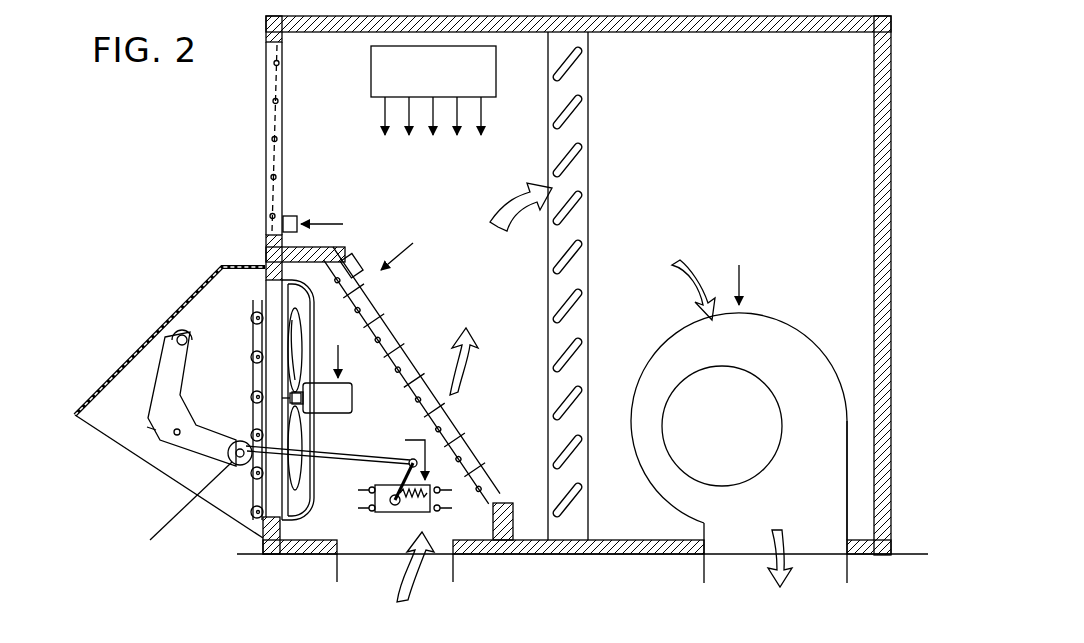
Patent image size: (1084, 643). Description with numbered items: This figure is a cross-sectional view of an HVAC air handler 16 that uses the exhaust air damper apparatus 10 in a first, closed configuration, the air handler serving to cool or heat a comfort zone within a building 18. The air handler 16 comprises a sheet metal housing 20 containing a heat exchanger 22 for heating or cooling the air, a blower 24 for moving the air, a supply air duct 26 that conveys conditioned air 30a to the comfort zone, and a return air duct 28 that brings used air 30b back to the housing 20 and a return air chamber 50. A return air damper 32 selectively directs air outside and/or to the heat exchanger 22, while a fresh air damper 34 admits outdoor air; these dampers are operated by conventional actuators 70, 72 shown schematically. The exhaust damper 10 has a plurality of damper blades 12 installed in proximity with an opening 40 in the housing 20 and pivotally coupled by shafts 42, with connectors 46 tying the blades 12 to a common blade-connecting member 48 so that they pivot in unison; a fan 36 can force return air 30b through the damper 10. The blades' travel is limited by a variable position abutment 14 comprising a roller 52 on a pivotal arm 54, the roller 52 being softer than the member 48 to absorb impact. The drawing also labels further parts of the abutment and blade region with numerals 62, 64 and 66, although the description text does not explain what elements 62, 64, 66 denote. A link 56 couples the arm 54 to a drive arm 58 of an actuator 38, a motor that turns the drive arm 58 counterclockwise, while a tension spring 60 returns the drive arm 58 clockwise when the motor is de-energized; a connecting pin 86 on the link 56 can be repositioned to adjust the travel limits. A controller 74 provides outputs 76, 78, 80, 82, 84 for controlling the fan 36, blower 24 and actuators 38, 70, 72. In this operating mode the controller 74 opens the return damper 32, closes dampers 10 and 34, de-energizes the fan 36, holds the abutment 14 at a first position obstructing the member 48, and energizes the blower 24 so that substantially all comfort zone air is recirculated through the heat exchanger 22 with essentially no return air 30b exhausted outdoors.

The air damper apparatus 10 is at (195, 528).
The damper blades 12 is at (258, 320).
The variable position abutment 14 is at (233, 465).
The air handler 16 is at (150, 160).
The building 18 is at (908, 553).
The housing 20 is at (268, 242).
The heat exchanger 22 is at (589, 260).
The blower 24 is at (778, 315).
The supply air duct 26 is at (704, 563).
The return air duct 28 is at (335, 563).
The conditioned air 30a is at (792, 550).
The used air 30b is at (398, 582).
The return air damper 32 is at (478, 448).
The fresh air damper 34 is at (275, 125).
The fan 36 is at (305, 483).
The actuator 38 is at (427, 512).
The opening 40 is at (278, 300).
The shafts 42 is at (292, 336).
The connectors 46 is at (250, 468).
The blade-connecting member 48 is at (253, 412).
The return air chamber 50 is at (341, 400).
The roller 52 is at (176, 510).
The pivotal arm 54 is at (160, 377).
The link 56 is at (368, 448).
The drive arm 58 is at (408, 478).
The tension spring 60 is at (413, 500).
The hinge 62 is at (180, 333).
The lever 64 is at (160, 345).
The door edge 66 is at (97, 397).
The actuator 70 is at (363, 275).
The actuator 72 is at (292, 218).
The controller 74 is at (433, 71).
The output 76 is at (385, 118).
The output 78 is at (741, 277).
The output 80 is at (433, 120).
The output 82 is at (457, 118).
The output 84 is at (318, 222).
The connecting pin 86 is at (176, 436).